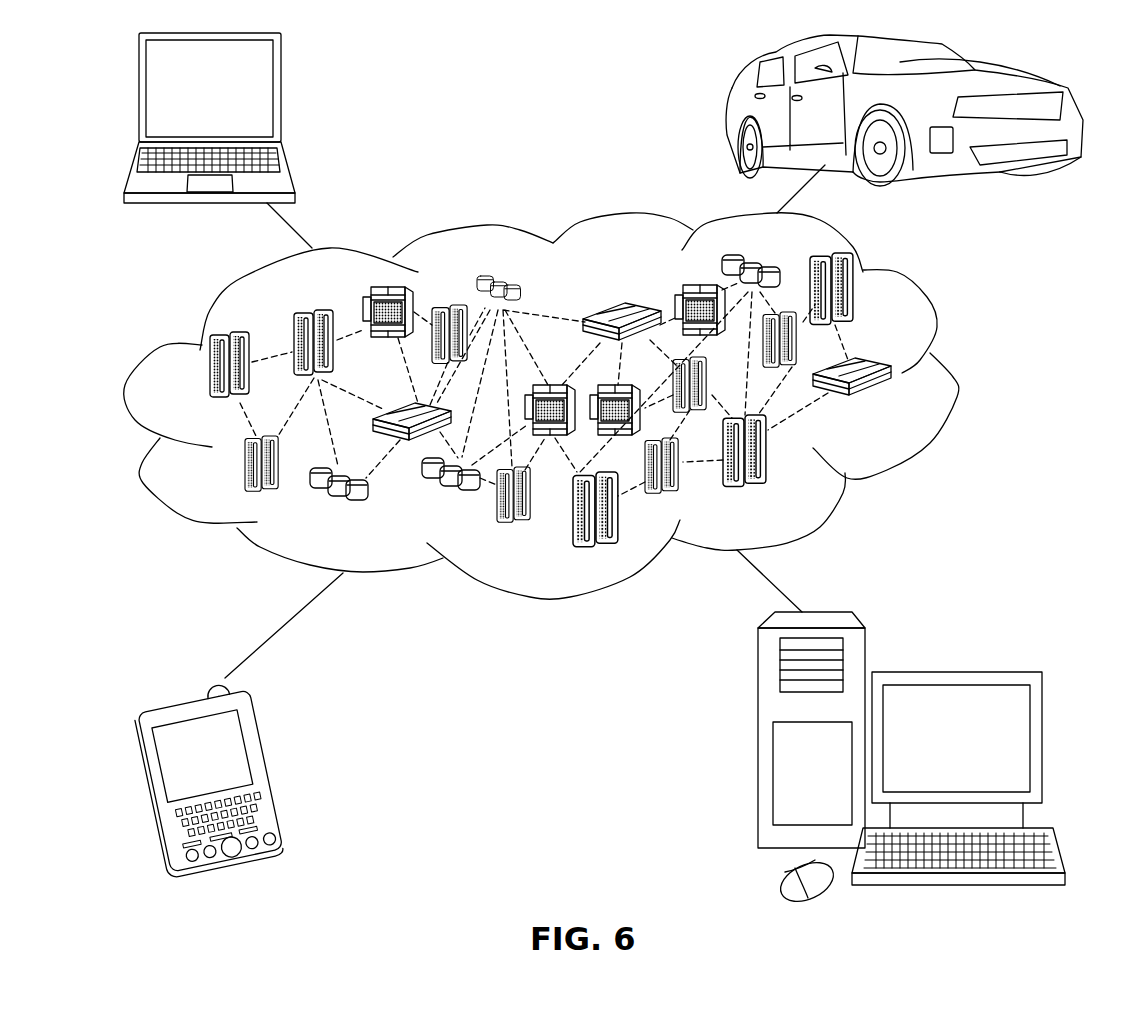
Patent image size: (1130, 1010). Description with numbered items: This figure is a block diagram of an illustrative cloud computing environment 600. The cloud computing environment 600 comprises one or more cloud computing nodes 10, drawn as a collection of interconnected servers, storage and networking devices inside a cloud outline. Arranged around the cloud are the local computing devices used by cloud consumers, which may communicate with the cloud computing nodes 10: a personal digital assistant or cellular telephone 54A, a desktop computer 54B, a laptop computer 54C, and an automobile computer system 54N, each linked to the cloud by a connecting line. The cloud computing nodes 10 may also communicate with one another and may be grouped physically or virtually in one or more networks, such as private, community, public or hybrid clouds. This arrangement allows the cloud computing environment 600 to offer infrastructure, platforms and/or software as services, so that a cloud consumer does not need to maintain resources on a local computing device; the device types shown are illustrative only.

The cloud computing environment 600 is at (953, 373).
The cloud computing node 10 is at (905, 407).
The personal digital assistant or cellular telephone 54A is at (272, 768).
The desktop computer 54B is at (953, 670).
The laptop computer 54C is at (282, 98).
The automobile computer system 54N is at (727, 112).